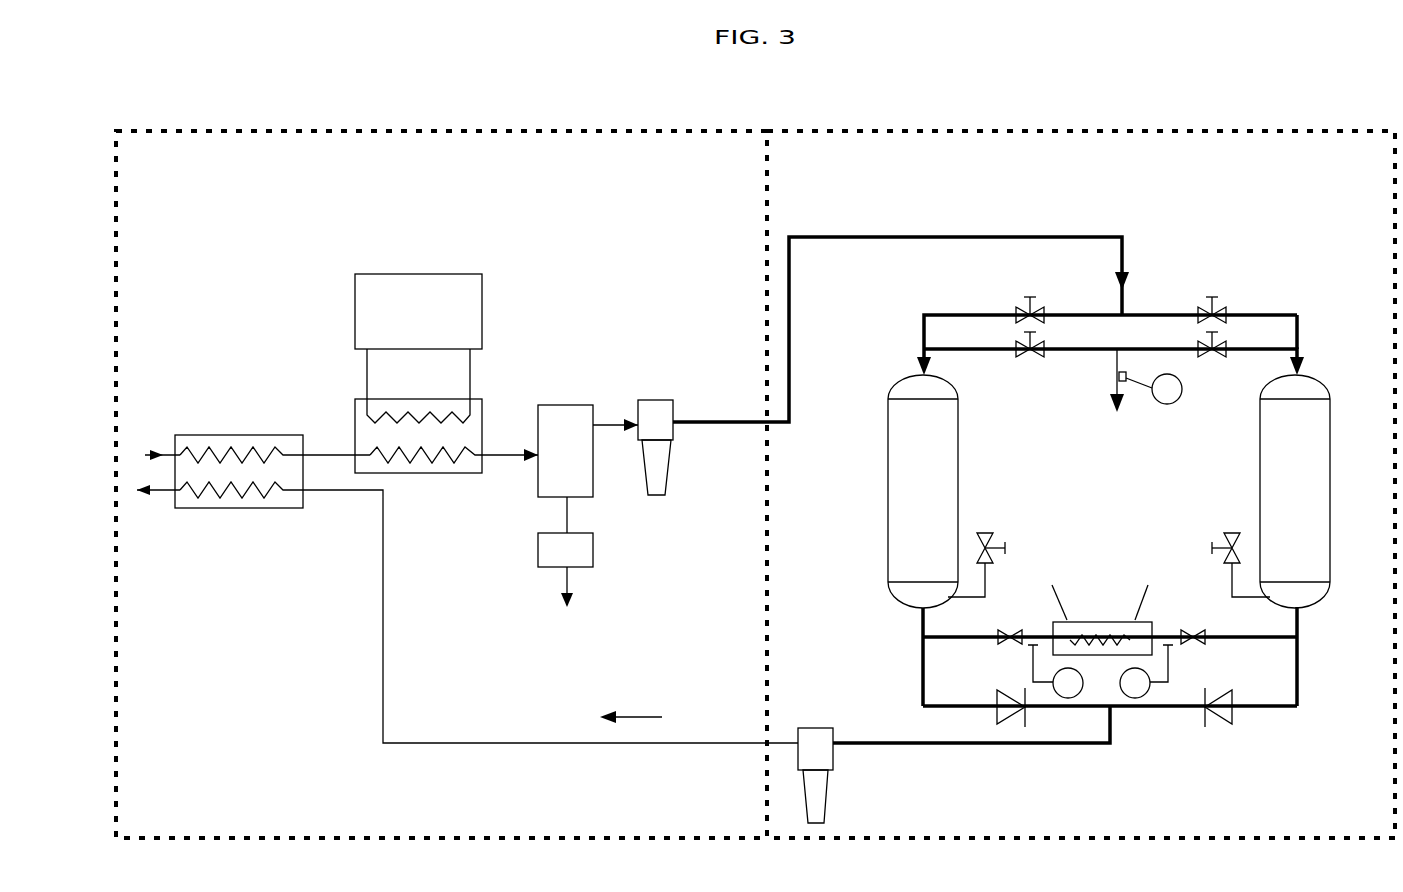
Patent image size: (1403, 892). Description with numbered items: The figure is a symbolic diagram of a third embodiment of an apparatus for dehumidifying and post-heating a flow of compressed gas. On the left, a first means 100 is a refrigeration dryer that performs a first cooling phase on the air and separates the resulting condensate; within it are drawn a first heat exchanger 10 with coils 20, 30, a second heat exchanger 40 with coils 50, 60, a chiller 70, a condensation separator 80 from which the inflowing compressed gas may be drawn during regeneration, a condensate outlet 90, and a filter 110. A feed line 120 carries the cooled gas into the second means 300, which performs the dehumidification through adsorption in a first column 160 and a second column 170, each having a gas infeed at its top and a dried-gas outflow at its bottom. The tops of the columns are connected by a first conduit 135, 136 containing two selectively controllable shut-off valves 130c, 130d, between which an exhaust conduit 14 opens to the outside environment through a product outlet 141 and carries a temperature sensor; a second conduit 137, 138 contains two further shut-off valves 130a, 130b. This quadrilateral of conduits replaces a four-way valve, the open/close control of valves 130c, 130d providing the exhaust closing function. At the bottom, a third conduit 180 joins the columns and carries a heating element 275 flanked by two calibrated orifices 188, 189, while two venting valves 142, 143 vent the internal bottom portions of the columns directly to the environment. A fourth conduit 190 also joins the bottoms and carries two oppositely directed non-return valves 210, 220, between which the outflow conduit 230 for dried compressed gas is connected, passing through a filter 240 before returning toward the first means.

The first means 100 is at (175, 835).
The second means 300 is at (1048, 835).
The first heat exchanger 10 is at (207, 433).
The cooling coil 20 is at (218, 492).
The gas coil 30 is at (265, 448).
The second heat exchanger 40 is at (483, 474).
The gas coil 50 is at (413, 458).
The refrigerant coil 60 is at (470, 412).
The chiller 70 is at (418, 311).
The condensation separator 80 is at (588, 469).
The condensate outlet 90 is at (565, 570).
The filter 110 is at (660, 398).
The feed line 120 is at (830, 236).
The selectively controllable shut-off valve 130a is at (1032, 298).
The selectively controllable shut-off valve 130b is at (1212, 298).
The selectively controllable shut-off valve 130c is at (1212, 357).
The selectively controllable shut-off valve 130d is at (1030, 357).
The first conduit 135 is at (1273, 315).
The first conduit 136 is at (920, 332).
The second conduit 137 is at (962, 352).
The second conduit 138 is at (1275, 349).
The exhaust conduit 14 is at (1115, 365).
The product gas outlet 141 is at (1124, 412).
The venting valve 142 is at (998, 538).
The venting valve 143 is at (1218, 540).
The first column 160 is at (1295, 491).
The second column 170 is at (923, 491).
The third conduit 180 is at (1248, 635).
The calibrated orifice 188 is at (1197, 645).
The calibrated orifice 189 is at (1008, 645).
The fourth conduit 190 is at (1300, 692).
The non-return valve 210 is at (1212, 722).
The non-return valve 220 is at (1018, 720).
The outflow conduit 230 is at (890, 740).
The filter 240 is at (833, 763).
The heating element 275 is at (1095, 620).